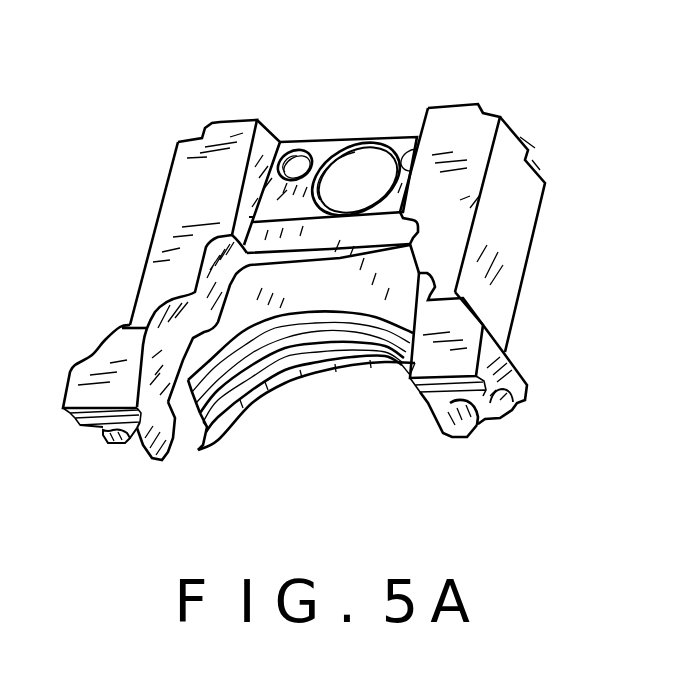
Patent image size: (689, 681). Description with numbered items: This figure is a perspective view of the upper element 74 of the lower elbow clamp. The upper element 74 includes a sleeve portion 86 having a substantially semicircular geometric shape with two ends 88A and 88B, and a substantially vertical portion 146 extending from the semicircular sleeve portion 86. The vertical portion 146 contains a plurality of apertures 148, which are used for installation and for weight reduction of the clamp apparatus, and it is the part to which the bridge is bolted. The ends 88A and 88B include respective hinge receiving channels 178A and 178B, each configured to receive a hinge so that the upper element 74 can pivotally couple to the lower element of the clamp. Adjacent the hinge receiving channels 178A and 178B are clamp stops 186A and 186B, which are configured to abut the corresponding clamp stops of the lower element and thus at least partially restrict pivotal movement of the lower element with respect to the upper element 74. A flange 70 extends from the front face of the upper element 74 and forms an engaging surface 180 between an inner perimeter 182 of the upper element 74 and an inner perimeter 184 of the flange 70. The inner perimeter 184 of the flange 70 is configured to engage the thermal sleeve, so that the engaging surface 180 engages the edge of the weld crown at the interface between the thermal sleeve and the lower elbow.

The upper element 74 is at (320, 277).
The apertures 148 is at (356, 162).
The substantially vertical portion 146 is at (477, 142).
The sleeve portion 86 is at (380, 278).
The inner perimeter of upper element 182 is at (298, 326).
The end of upper element 88A is at (108, 367).
The end of upper element 88B is at (467, 337).
The flange 70 is at (277, 387).
The inner perimeter of flange 184 is at (318, 363).
The engaging surface 180 is at (200, 453).
The hinge receiving channel 178A is at (70, 425).
The hinge receiving channel 178B is at (415, 393).
The clamp stop 186A is at (163, 458).
The clamp stop 186B is at (447, 427).